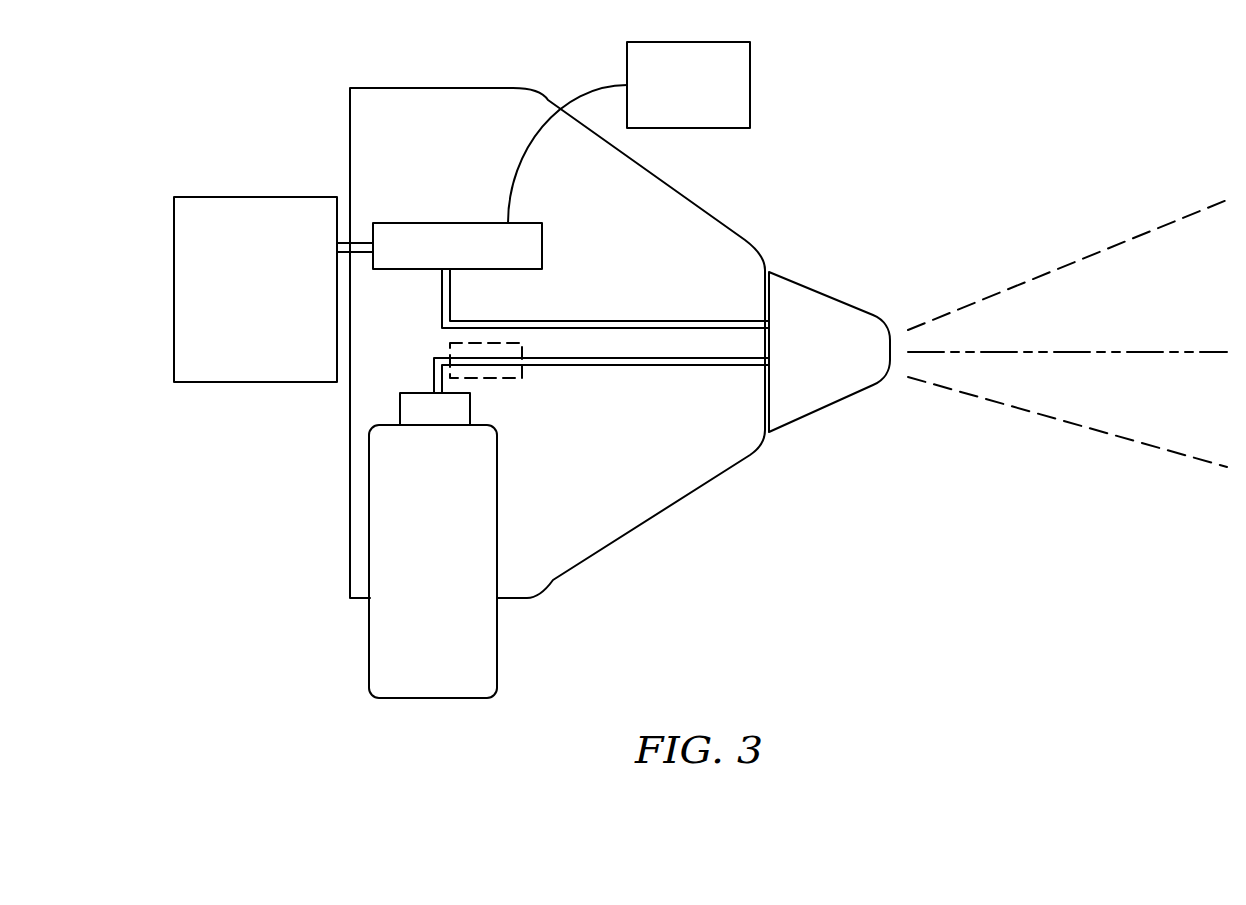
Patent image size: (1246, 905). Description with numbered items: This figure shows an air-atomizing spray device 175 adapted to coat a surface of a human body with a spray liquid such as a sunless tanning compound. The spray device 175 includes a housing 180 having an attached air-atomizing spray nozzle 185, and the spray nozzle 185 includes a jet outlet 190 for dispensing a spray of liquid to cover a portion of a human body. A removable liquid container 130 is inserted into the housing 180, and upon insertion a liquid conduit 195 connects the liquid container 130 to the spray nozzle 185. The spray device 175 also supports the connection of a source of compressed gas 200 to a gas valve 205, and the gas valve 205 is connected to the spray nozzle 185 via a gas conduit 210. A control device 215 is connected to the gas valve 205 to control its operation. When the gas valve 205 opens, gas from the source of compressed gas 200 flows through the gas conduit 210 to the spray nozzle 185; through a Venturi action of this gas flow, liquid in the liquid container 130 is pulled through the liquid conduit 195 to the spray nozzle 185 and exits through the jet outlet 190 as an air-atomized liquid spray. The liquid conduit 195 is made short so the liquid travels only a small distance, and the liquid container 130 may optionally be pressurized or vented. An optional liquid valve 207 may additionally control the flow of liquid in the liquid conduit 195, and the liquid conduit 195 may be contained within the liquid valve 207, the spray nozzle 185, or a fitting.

The spray device 175 is at (220, 86).
The housing 180 is at (647, 507).
The air-atomizing spray nozzle 185 is at (806, 268).
The jet outlet 190 is at (906, 345).
The liquid conduit 195 is at (550, 380).
The source of compressed gas 200 is at (266, 183).
The gas valve 205 is at (464, 209).
The liquid valve 207 is at (433, 342).
The gas conduit 210 is at (555, 306).
The control device 215 is at (629, 132).
The removable liquid container 130 is at (476, 637).